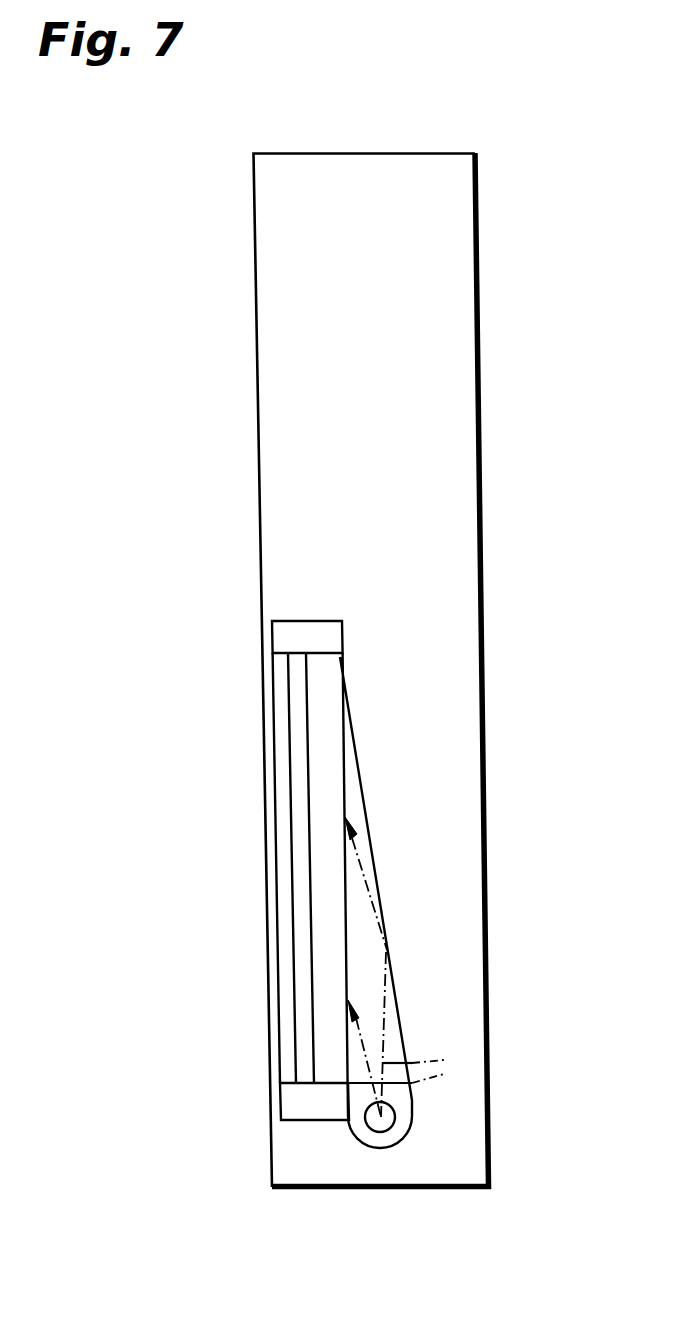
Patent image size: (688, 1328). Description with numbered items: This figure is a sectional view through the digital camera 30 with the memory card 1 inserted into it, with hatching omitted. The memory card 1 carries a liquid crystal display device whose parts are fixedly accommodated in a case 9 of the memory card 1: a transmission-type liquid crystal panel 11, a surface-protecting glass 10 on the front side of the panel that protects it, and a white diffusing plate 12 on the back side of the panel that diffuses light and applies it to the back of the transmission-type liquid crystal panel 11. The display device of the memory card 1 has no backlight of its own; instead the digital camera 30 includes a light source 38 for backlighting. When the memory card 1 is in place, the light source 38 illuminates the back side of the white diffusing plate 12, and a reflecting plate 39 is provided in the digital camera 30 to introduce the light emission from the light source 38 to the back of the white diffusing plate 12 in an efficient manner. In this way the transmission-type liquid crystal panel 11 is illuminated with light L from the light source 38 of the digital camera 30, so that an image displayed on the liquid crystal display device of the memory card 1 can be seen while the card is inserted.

The memory card 1 is at (359, 832).
The case 9 is at (325, 638).
The surface-protecting glass 10 is at (285, 848).
The transmission-type liquid crystal panel 11 is at (302, 773).
The white diffusing plate 12 is at (325, 703).
The digital camera 30 is at (477, 273).
The light source 38 is at (380, 1126).
The reflecting plate 39 is at (397, 1003).
The light L is at (411, 1064).